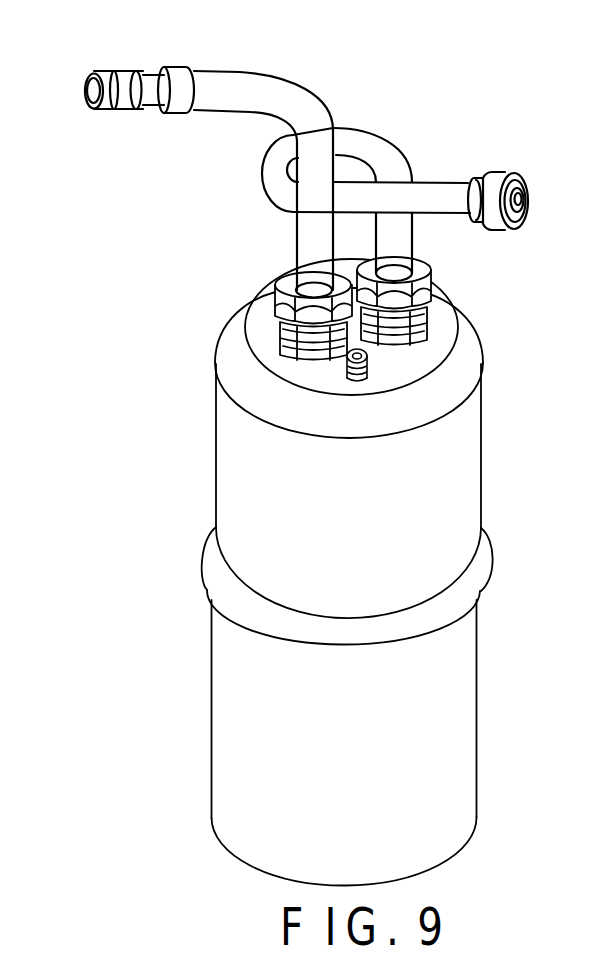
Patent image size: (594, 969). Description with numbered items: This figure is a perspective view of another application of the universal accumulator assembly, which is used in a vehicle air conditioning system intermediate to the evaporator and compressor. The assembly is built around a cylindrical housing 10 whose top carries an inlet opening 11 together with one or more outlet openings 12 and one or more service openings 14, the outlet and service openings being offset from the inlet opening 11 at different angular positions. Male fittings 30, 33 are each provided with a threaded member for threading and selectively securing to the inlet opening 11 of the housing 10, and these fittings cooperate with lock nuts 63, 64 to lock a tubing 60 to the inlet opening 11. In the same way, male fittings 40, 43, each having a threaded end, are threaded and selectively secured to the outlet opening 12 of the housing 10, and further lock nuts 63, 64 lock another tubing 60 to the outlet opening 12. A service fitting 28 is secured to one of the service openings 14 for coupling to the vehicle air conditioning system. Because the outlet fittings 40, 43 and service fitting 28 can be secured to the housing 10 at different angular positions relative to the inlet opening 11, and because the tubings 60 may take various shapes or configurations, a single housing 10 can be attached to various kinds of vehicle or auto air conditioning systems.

The housing 10 is at (451, 518).
The inlet opening 11 is at (423, 342).
The outlet opening 12 is at (305, 366).
The service opening 14 is at (370, 386).
The service fitting 28 is at (369, 375).
The male fitting 30 is at (469, 291).
The male fitting 33 is at (427, 322).
The male fitting 40 is at (245, 323).
The male fitting 43 is at (281, 331).
The tubing 60 is at (303, 238).
The lock nut 63 is at (328, 278).
The lock nut 64 is at (279, 291).